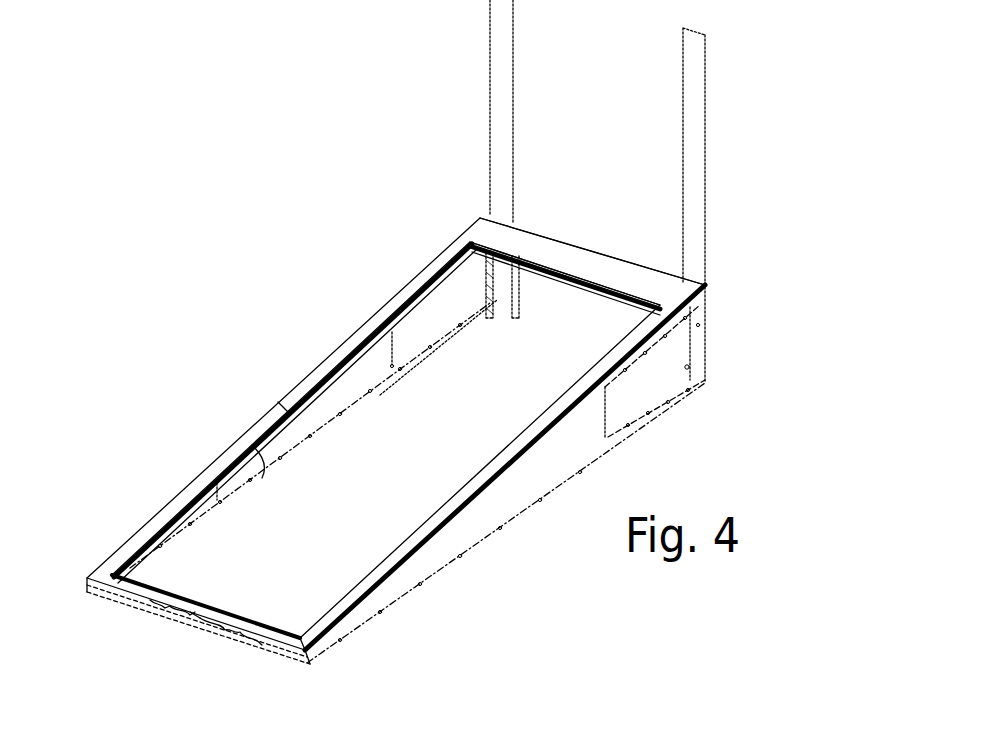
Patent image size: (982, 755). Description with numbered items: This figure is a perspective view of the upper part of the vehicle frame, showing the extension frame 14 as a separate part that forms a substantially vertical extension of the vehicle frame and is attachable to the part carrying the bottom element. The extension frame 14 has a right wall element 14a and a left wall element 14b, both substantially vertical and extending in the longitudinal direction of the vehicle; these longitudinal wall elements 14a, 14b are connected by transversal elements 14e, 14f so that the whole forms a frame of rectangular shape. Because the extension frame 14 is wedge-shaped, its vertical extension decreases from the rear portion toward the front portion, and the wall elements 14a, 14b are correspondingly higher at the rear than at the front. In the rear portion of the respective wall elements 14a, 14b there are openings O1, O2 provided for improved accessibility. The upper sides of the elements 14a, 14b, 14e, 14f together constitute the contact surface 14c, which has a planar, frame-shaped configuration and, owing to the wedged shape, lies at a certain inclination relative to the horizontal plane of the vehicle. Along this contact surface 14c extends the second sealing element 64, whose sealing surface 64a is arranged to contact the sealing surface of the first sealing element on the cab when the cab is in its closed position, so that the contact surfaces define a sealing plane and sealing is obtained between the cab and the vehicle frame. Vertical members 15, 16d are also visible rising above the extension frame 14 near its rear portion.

The extension frame 14 is at (267, 298).
The right wall element 14a is at (338, 396).
The left wall element 14b is at (457, 533).
The contact surface 14c is at (511, 240).
The transversal element 14e is at (183, 618).
The transversal element 14f is at (557, 278).
The post 15 is at (427, 159).
The post 16d is at (457, 191).
The second sealing element 64 is at (292, 388).
The sealing surface 64a is at (193, 490).
The opening O1 is at (432, 322).
The opening O2 is at (650, 388).